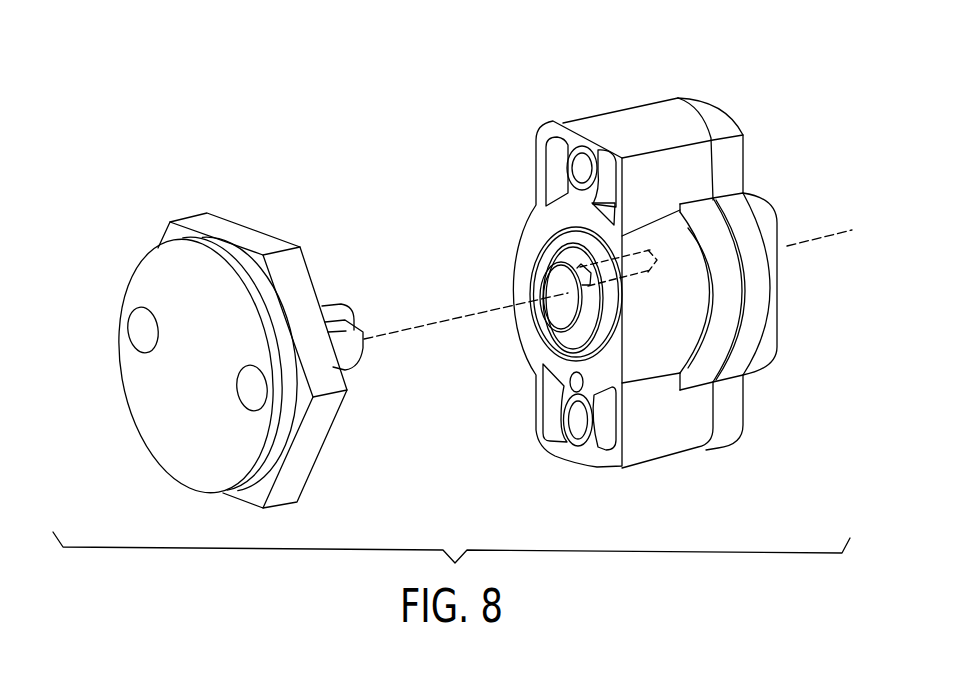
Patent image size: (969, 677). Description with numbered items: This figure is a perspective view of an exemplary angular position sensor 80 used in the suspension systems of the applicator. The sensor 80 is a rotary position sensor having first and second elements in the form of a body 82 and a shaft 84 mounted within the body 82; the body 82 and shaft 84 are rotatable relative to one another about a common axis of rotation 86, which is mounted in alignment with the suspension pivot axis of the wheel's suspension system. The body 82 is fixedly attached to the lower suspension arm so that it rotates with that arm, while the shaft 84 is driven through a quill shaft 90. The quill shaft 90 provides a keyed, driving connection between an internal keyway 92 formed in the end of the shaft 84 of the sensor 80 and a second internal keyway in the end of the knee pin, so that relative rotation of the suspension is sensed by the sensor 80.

The angular position sensor 80 is at (628, 114).
The body 82 is at (545, 222).
The shaft 84 is at (540, 268).
The axis of rotation 86 is at (832, 235).
The quill shaft 90 is at (165, 278).
The internal keyway 92 is at (560, 312).